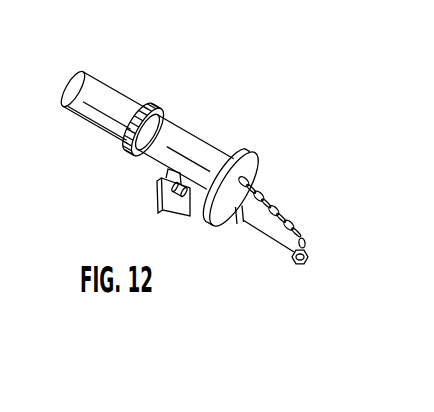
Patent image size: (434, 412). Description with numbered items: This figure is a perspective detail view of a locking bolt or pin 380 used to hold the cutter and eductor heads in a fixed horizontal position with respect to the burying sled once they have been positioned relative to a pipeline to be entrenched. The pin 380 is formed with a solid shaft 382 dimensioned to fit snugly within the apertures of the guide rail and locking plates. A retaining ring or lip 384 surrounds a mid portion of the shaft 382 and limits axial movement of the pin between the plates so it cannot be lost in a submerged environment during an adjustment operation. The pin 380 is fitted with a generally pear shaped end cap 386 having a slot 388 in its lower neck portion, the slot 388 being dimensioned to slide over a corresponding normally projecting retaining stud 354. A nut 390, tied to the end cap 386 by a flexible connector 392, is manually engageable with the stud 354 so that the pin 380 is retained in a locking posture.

The locking bolt or pin 380 is at (170, 89).
The solid shaft 382 is at (95, 87).
The retaining ring or lip 384 is at (163, 112).
The retaining stud 354 is at (179, 197).
The pear shaped end cap 386 is at (241, 162).
The slot 388 is at (240, 226).
The flexible connector 392 is at (298, 218).
The nut 390 is at (310, 260).